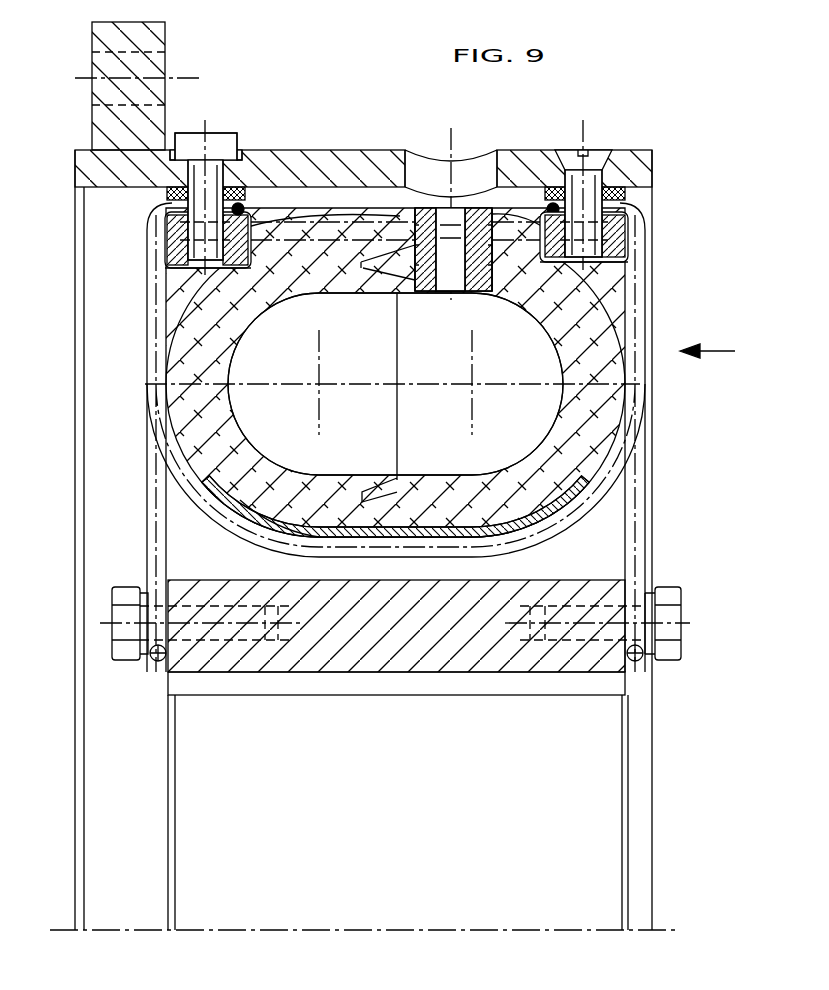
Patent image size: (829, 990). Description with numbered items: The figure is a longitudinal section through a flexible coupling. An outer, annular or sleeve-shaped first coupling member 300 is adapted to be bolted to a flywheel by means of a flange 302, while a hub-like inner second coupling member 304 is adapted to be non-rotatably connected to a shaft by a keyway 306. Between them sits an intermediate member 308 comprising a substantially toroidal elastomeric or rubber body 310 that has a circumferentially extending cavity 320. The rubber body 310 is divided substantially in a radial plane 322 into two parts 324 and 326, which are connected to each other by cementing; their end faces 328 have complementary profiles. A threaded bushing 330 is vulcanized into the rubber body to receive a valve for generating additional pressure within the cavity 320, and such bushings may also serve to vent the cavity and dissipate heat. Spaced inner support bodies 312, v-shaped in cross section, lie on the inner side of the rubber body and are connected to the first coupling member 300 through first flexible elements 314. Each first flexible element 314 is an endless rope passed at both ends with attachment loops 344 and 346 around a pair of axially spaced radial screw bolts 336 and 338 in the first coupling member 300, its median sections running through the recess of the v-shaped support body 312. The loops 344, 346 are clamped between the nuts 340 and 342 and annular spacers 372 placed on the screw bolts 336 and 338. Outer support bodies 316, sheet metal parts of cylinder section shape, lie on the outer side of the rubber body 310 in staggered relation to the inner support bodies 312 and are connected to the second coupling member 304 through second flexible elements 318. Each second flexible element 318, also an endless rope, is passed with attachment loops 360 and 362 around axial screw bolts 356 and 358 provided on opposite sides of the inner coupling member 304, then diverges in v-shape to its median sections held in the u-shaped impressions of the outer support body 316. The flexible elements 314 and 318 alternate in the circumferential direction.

The outer first coupling member 300 is at (305, 162).
The flange 302 is at (140, 40).
The inner second coupling member 304 is at (414, 675).
The keyway 306 is at (530, 684).
The intermediate member 308 is at (248, 424).
The elastomeric or rubber body 310 is at (312, 502).
The inner support body 312 is at (236, 522).
The first flexible element 314 is at (152, 304).
The outer support body 316 is at (342, 218).
The second flexible element 318 is at (152, 522).
The cavity 320 is at (395, 382).
The radial plane 322 is at (400, 456).
The first part of rubber body 324 is at (222, 345).
The second part of rubber body 326 is at (562, 342).
The end face 328 is at (388, 292).
The threaded bushing 330 is at (432, 292).
The radial screw bolt 336 is at (226, 138).
The radial screw bolt 338 is at (602, 152).
The nut 340 is at (166, 240).
The nut 342 is at (628, 254).
The attachment loop 344 is at (242, 215).
The attachment loop 346 is at (545, 210).
The axial screw bolt 356 is at (126, 662).
The axial screw bolt 358 is at (666, 586).
The attachment loop 360 is at (165, 665).
The attachment loop 362 is at (642, 656).
The annular spacer 372 is at (166, 200).